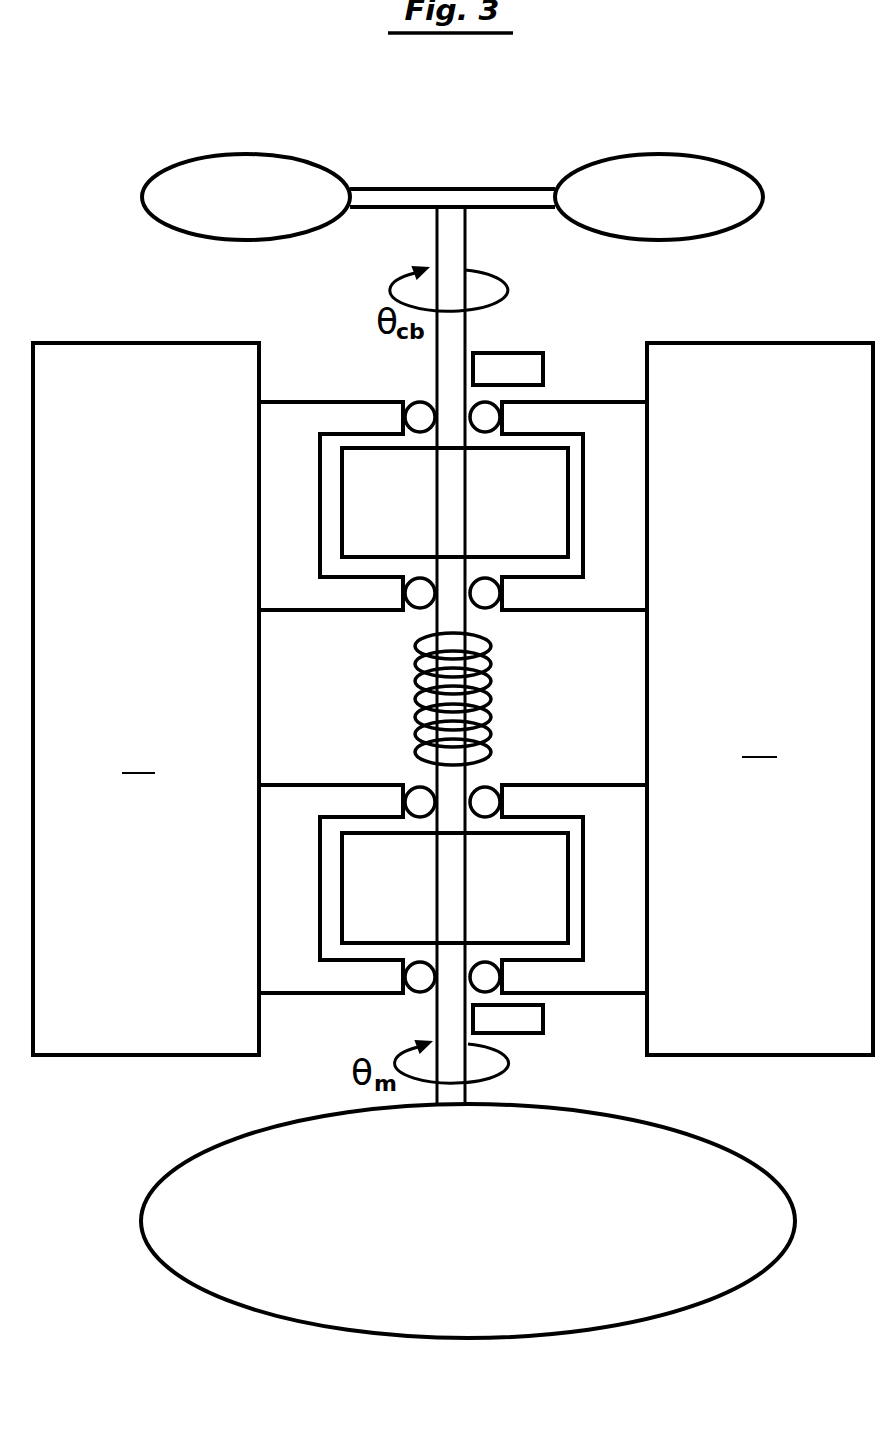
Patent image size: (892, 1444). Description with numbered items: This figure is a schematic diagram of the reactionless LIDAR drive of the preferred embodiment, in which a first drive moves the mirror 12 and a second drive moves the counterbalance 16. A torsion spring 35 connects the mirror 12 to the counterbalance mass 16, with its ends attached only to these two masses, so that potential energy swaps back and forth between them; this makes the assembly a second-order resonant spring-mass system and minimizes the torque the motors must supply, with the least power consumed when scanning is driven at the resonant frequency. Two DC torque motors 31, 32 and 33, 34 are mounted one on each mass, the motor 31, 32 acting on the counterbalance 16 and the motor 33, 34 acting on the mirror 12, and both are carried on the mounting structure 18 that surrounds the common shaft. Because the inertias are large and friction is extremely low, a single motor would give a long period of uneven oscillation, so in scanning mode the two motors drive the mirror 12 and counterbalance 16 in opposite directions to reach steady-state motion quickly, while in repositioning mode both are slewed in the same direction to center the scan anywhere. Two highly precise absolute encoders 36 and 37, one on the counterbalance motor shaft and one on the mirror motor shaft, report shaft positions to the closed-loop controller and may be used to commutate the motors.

The mirror 12 is at (483, 1262).
The counterbalance mass 16 is at (220, 173).
The mounting structure 18 is at (453, 699).
The DC torque motor 31 is at (300, 422).
The DC torque motor 32 is at (437, 543).
The DC torque motor 33 is at (296, 808).
The DC torque motor 34 is at (472, 928).
The torsion spring 35 is at (483, 715).
The absolute encoder 36 is at (535, 363).
The absolute encoder 37 is at (520, 1023).